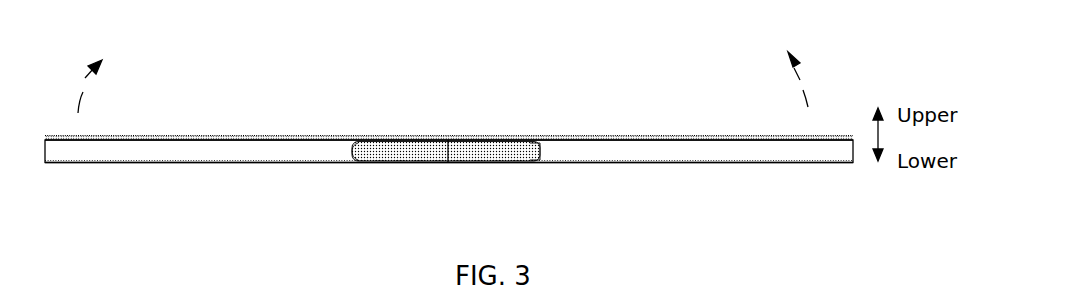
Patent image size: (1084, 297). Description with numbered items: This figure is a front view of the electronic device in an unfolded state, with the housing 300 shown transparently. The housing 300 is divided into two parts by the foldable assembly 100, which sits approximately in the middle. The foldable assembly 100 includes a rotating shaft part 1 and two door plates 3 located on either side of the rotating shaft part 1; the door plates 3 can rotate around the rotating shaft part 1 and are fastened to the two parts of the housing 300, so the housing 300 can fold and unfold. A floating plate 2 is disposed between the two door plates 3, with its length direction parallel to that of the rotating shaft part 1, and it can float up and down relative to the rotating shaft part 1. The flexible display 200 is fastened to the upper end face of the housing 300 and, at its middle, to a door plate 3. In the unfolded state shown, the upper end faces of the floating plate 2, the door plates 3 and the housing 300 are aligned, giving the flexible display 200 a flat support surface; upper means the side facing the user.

The rotating shaft part 1 is at (442, 158).
The floating plate 2 is at (455, 140).
The door plate 3 is at (385, 140).
The foldable assembly 100 is at (495, 182).
The flexible display 200 is at (677, 137).
The housing 300 is at (205, 157).